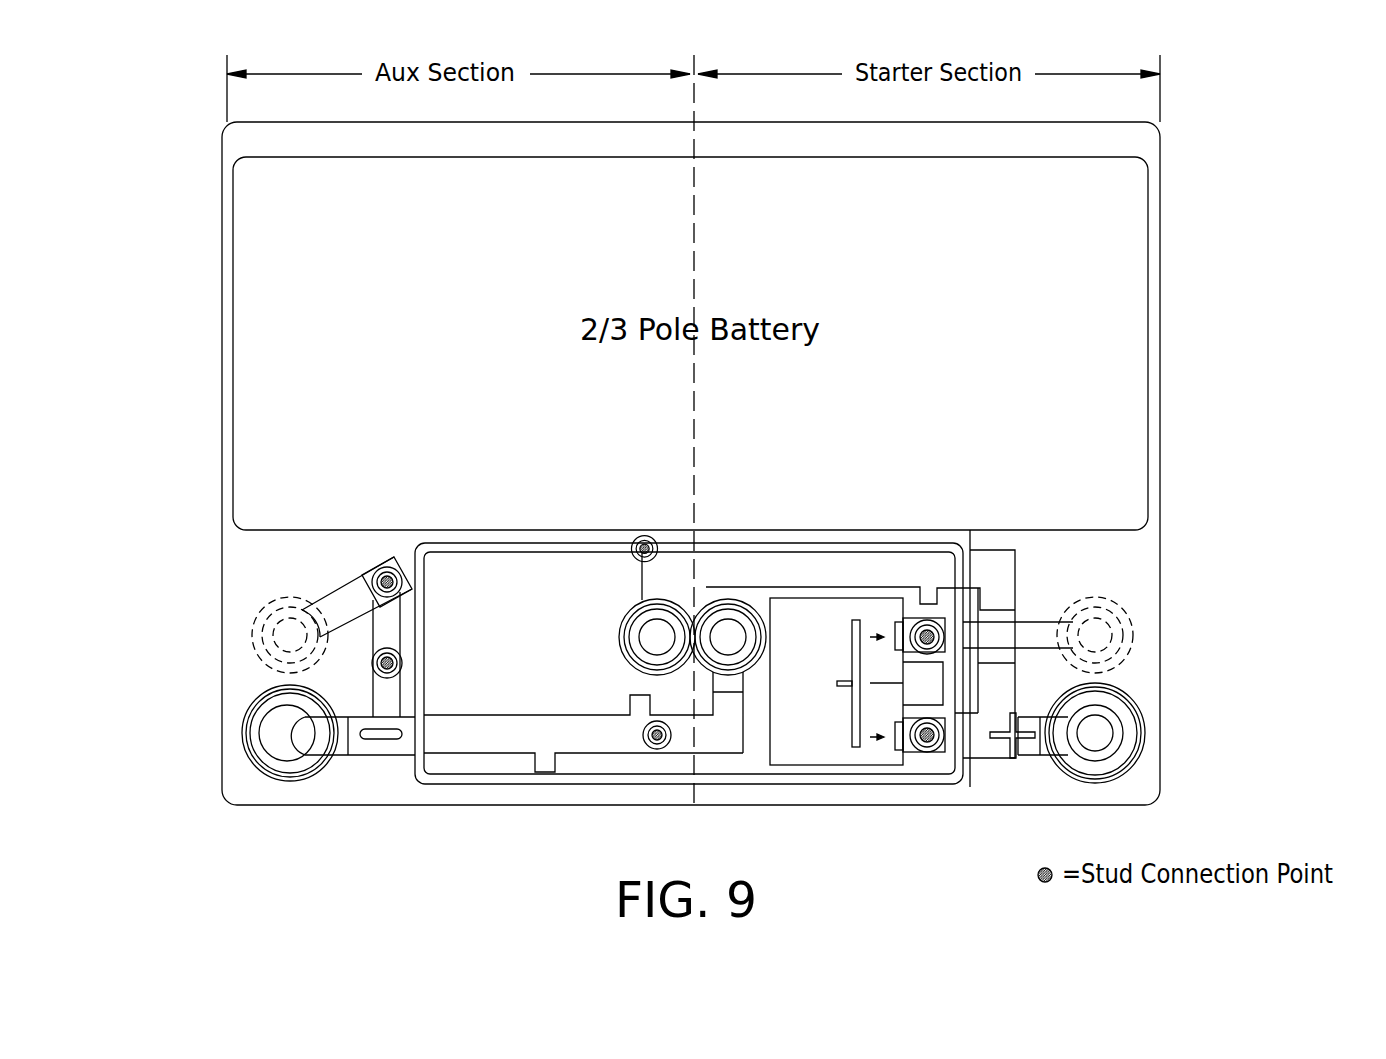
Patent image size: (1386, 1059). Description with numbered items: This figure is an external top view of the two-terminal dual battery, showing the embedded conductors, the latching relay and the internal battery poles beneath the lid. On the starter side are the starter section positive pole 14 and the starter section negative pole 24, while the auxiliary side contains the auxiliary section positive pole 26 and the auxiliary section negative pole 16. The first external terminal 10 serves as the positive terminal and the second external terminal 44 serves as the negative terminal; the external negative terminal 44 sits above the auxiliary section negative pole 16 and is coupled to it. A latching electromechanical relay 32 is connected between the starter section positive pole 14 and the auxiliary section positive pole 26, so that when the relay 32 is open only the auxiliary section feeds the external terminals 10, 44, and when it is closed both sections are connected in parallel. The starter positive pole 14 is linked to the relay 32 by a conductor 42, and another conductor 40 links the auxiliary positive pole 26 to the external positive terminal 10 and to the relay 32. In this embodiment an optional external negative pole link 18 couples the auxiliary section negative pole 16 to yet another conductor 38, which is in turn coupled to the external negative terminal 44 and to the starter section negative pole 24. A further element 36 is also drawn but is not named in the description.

The first external terminal 10 is at (1122, 730).
The starter section positive pole 14 is at (1113, 628).
The auxiliary section negative pole 16 is at (276, 628).
The external negative pole link 18 is at (330, 613).
The starter section negative pole 24 is at (735, 603).
The auxiliary section positive pole 26 is at (640, 640).
The latching electromechanical relay 32 is at (807, 738).
The connection stud 36 is at (353, 578).
The conductor 38 is at (458, 760).
The conductor 40 is at (993, 548).
The conductor 42 is at (1038, 622).
The second external terminal 44 is at (262, 738).